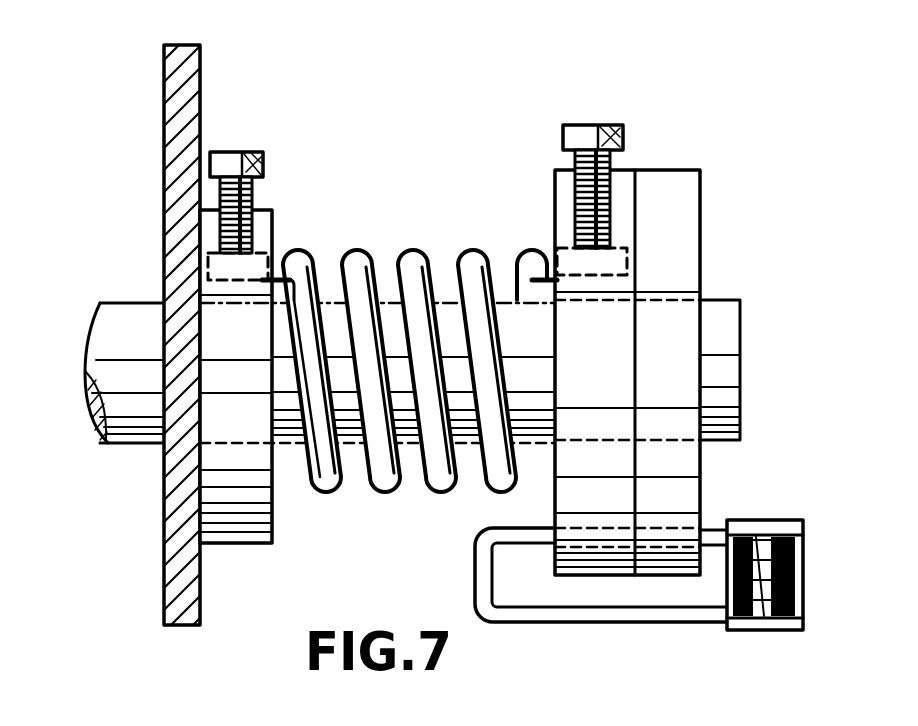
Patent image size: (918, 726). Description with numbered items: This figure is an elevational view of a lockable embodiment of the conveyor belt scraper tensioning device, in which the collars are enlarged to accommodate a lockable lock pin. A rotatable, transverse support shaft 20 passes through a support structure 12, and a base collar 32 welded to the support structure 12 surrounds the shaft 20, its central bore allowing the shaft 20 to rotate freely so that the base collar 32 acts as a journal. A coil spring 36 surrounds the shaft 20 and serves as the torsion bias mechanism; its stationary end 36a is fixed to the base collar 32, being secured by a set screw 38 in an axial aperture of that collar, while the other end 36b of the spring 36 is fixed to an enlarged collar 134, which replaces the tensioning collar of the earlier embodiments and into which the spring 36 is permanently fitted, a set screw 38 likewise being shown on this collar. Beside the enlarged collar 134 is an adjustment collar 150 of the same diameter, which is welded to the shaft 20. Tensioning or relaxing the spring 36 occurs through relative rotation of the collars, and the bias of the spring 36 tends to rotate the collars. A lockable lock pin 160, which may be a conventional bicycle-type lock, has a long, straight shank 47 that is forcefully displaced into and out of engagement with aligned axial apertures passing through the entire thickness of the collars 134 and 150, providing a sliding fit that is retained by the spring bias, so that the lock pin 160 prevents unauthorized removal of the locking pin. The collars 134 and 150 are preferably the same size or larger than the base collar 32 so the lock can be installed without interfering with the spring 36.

The support structure 12 is at (177, 155).
The support shaft 20 is at (133, 433).
The base collar 32 is at (262, 230).
The coil spring 36 is at (409, 338).
The stationary end of the spring 36a is at (278, 266).
The other end of the spring 36b is at (547, 263).
The set screw 38 is at (252, 158).
The shank 47 is at (505, 534).
The enlarged collar 134 is at (567, 185).
The adjustment collar 150 is at (680, 190).
The lockable lock pin 160 is at (758, 540).